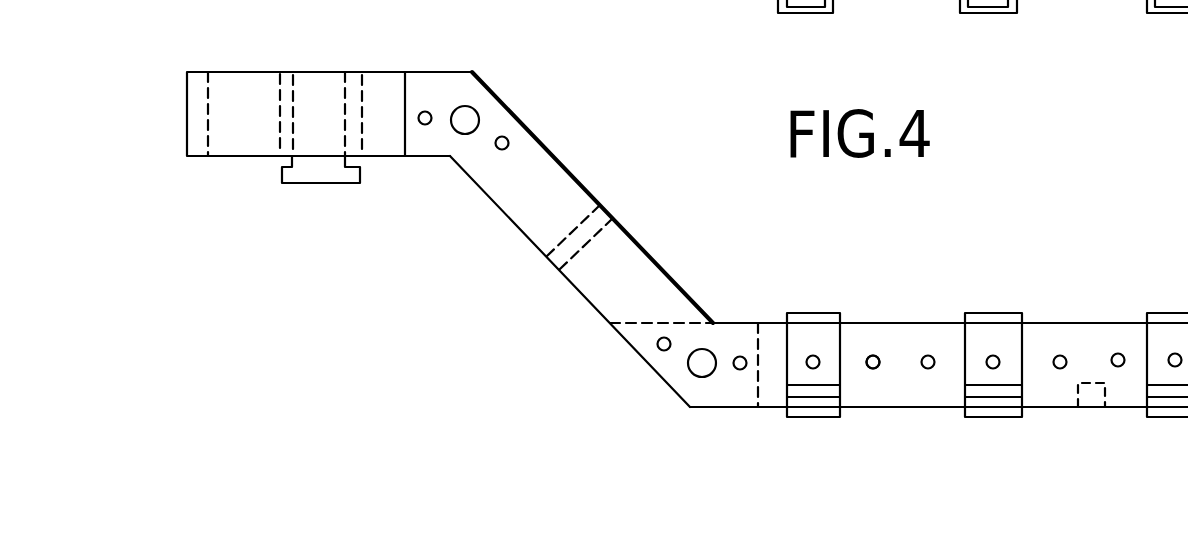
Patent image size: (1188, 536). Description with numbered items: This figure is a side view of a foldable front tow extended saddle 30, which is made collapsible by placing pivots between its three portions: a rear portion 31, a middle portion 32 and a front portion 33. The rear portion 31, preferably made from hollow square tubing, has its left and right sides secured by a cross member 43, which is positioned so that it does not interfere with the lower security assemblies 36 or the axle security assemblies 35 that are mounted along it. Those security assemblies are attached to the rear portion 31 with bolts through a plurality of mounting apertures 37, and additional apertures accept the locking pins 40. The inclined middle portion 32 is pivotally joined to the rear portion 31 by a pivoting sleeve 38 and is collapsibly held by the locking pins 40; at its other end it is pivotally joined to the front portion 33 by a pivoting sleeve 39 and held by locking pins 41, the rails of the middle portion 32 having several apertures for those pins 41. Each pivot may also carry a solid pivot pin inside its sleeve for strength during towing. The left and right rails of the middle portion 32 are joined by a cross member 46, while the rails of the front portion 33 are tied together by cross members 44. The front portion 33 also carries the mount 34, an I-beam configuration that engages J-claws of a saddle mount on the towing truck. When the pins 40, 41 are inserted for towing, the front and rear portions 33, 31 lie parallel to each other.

The front tow extended saddle 30 is at (241, 214).
The rear portion 31 is at (1077, 323).
The middle portion 32 is at (583, 298).
The front portion 33 is at (252, 72).
The mount 34 is at (330, 185).
The axle security assembly 35 is at (988, 313).
The lower security assembly 36 is at (812, 313).
The mounting aperture 37 is at (873, 355).
The pivoting sleeve 38 is at (688, 363).
The pivoting sleeve 39 is at (450, 157).
The locking pin 40 is at (657, 345).
The locking pin 41 is at (426, 111).
The cross member 43 is at (1093, 407).
The cross member 44 is at (198, 73).
The cross member 46 is at (602, 205).